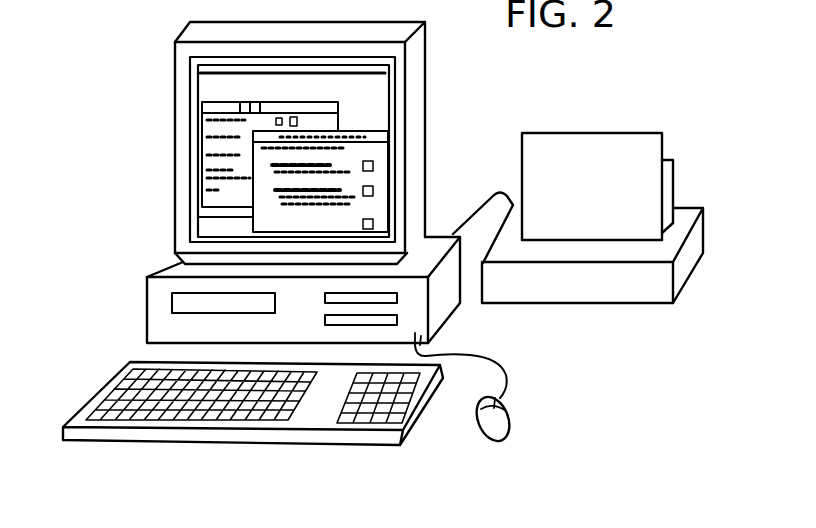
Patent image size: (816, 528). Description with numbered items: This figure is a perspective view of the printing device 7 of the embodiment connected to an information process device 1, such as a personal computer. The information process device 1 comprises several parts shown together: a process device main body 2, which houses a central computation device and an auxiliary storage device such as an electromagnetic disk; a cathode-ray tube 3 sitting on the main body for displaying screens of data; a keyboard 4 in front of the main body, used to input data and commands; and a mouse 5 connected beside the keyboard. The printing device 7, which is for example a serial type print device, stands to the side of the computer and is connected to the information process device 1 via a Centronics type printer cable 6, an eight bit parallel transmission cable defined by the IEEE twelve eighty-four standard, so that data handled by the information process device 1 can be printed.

The information process device 1 is at (168, 66).
The process device main body 2 is at (158, 308).
The cathode-ray tube 3 is at (173, 162).
The keyboard 4 is at (96, 392).
The mouse 5 is at (519, 416).
The printer cable 6 is at (480, 201).
The printing device 7 is at (573, 292).